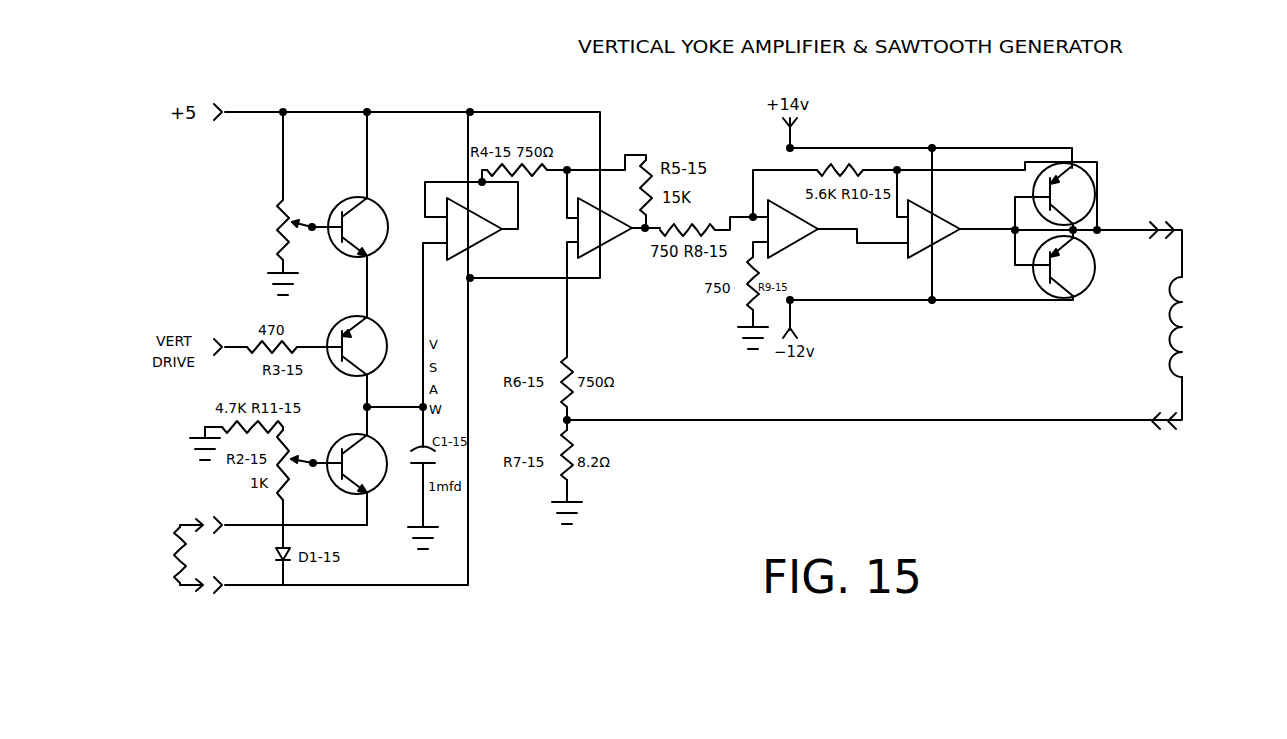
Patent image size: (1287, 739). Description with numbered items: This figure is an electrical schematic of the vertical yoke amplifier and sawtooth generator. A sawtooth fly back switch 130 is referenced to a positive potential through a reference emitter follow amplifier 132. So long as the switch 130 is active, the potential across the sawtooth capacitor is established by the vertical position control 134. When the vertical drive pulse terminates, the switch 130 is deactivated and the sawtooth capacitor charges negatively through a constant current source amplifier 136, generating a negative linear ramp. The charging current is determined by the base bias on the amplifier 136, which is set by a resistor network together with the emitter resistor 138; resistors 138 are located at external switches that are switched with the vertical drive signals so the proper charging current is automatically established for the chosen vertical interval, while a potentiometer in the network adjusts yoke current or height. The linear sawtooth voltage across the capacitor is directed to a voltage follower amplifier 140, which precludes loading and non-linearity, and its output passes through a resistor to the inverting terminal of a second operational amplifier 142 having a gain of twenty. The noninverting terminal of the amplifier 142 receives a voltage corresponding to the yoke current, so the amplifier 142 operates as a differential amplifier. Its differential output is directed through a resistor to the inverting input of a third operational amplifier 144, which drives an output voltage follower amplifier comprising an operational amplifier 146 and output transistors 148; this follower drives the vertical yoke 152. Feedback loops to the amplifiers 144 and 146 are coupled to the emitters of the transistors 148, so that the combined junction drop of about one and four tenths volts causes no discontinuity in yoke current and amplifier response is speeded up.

The sawtooth fly back switch 130 is at (405, 292).
The reference emitter follow amplifier 132 is at (370, 198).
The vertical position control 134 is at (286, 200).
The constant current source amplifier 136 is at (368, 492).
The emitter resistor 138 is at (173, 574).
The voltage follower amplifier 140 is at (500, 232).
The second operational amplifier 142 is at (620, 246).
The third operational amplifier 144 is at (808, 240).
The operational amplifier 146 is at (944, 230).
The transistor 148 is at (1089, 182).
The vertical yoke 152 is at (1180, 352).